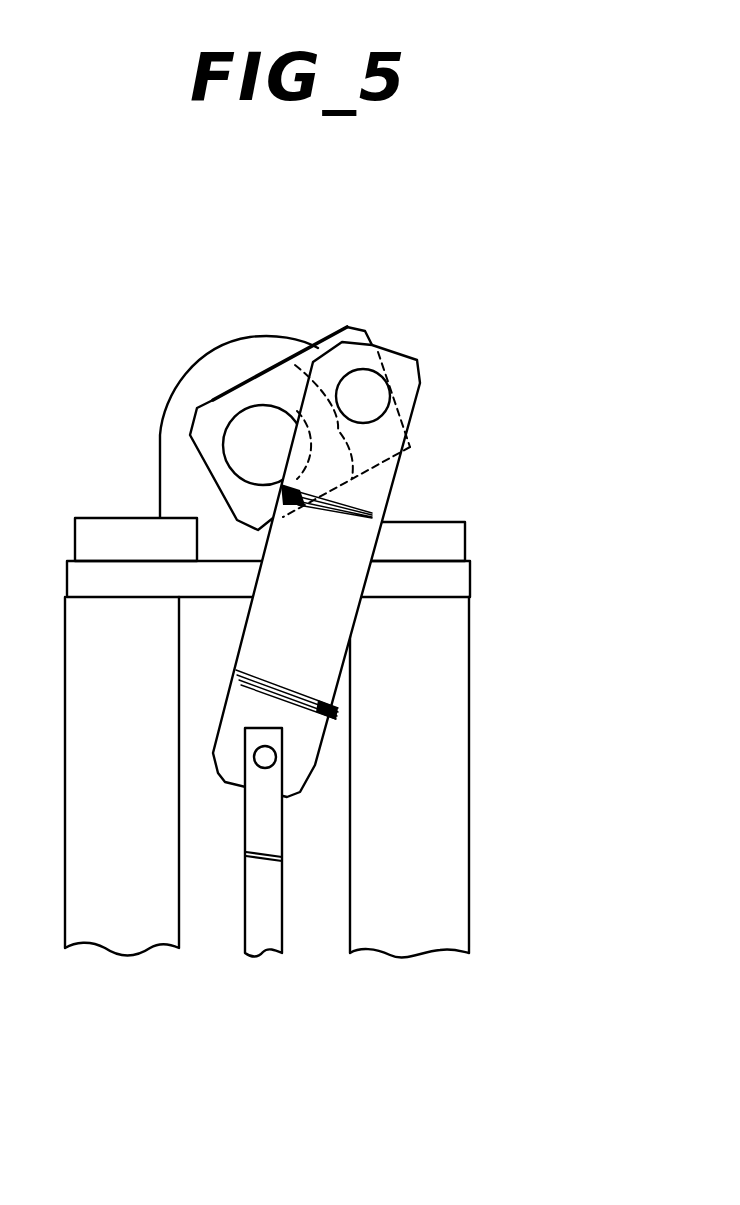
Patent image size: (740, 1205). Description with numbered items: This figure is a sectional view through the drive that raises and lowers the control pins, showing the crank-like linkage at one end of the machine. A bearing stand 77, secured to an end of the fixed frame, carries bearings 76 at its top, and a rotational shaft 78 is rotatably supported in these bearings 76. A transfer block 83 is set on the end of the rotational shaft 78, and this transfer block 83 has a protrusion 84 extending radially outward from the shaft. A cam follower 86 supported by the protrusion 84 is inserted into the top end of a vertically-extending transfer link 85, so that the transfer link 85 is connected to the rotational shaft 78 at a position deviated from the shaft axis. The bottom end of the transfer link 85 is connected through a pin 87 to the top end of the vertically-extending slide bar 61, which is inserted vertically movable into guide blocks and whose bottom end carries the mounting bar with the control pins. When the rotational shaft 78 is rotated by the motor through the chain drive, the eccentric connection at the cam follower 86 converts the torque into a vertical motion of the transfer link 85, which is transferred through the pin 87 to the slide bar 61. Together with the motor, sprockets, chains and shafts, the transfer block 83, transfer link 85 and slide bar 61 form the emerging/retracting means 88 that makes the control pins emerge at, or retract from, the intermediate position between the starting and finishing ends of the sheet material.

The slide bar 61 is at (260, 938).
The bearings 76 is at (232, 348).
The bearing stand 77 is at (447, 818).
The rotational shaft 78 is at (240, 435).
The transfer block 83 is at (213, 400).
The protrusion 84 is at (346, 328).
The transfer link 85 is at (370, 497).
The cam follower 86 is at (377, 398).
The pin 87 is at (261, 768).
The emerging/retracting means 88 is at (489, 559).